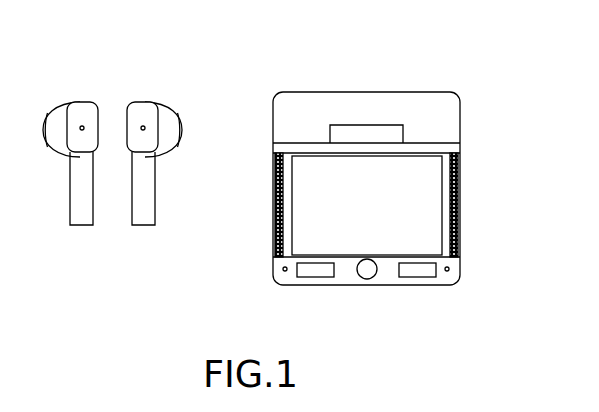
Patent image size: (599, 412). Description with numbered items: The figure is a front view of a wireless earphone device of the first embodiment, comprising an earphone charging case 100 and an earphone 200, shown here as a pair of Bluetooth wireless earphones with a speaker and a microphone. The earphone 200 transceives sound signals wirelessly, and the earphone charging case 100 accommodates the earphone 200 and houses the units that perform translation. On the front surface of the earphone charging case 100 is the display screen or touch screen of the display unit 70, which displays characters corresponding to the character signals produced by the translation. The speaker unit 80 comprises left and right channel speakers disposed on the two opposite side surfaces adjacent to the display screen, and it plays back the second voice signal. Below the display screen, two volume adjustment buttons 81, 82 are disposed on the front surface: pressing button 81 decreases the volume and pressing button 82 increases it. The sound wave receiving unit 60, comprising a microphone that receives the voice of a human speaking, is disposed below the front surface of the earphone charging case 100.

The earphone 200 is at (128, 65).
The earphone charging case 100 is at (375, 50).
The display unit 70 is at (317, 168).
The speaker unit 80 is at (458, 190).
The volume adjustment button 81 is at (317, 268).
The volume adjustment button 82 is at (418, 270).
The sound wave receiving unit 60 is at (449, 270).